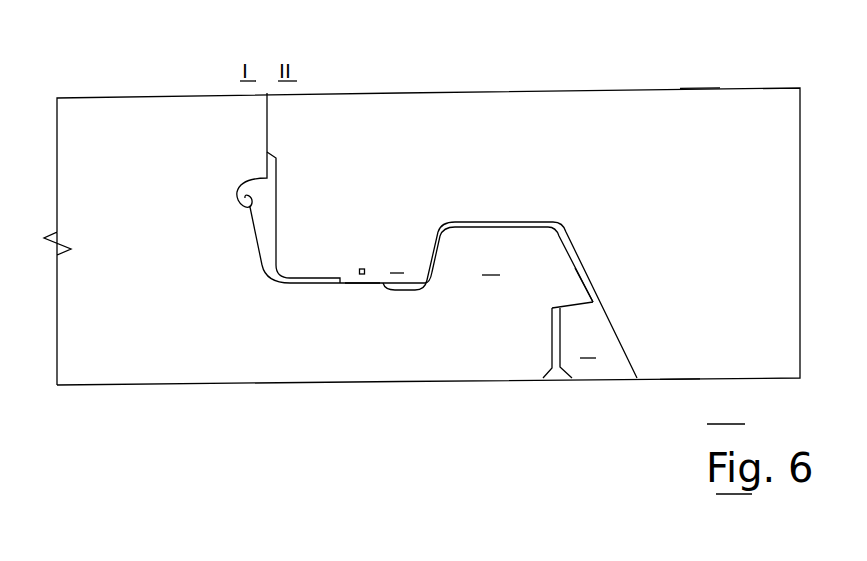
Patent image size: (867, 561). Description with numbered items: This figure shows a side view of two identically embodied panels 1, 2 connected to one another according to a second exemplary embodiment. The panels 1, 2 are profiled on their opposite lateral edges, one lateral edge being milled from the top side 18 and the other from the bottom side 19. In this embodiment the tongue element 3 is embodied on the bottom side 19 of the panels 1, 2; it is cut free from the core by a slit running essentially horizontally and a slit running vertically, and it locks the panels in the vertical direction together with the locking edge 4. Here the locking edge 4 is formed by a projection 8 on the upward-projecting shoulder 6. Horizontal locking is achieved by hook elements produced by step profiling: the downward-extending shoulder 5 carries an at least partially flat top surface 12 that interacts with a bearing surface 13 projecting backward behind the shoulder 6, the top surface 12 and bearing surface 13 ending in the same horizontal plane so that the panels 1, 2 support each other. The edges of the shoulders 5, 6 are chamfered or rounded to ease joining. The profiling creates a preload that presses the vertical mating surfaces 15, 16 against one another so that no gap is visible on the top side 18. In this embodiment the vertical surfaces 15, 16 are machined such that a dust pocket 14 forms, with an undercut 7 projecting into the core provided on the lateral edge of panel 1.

The panel 1 is at (157, 110).
The panel 2 is at (600, 109).
The tongue element 3 is at (574, 340).
The locking edge 4 is at (578, 298).
The shoulder 5 is at (410, 261).
The shoulder 6 is at (537, 300).
The undercut 7 is at (244, 205).
The projection 8 is at (577, 297).
The top surface 12 is at (364, 268).
The bearing surface 13 is at (362, 285).
The dust pocket 14 is at (265, 220).
The mating surface 15 is at (268, 125).
The mating surface 16 is at (272, 139).
The top side 18 is at (696, 88).
The bottom side 19 is at (678, 378).